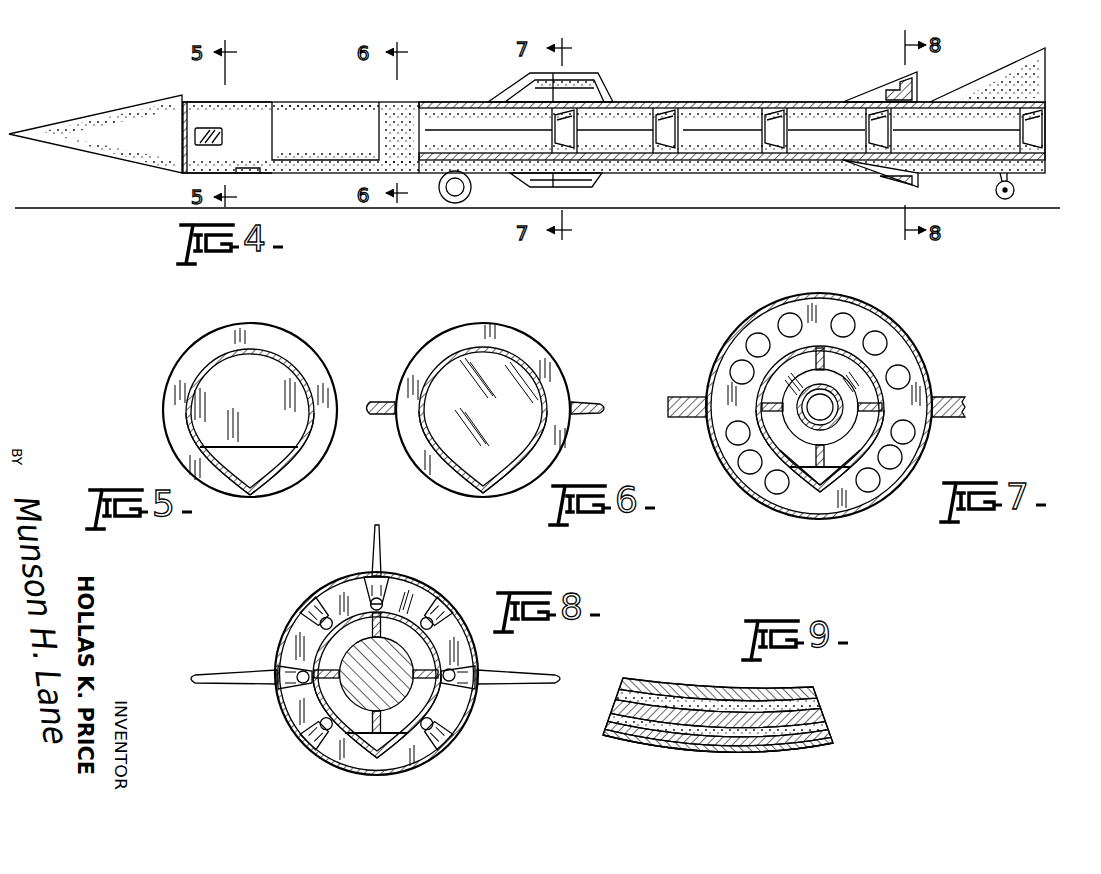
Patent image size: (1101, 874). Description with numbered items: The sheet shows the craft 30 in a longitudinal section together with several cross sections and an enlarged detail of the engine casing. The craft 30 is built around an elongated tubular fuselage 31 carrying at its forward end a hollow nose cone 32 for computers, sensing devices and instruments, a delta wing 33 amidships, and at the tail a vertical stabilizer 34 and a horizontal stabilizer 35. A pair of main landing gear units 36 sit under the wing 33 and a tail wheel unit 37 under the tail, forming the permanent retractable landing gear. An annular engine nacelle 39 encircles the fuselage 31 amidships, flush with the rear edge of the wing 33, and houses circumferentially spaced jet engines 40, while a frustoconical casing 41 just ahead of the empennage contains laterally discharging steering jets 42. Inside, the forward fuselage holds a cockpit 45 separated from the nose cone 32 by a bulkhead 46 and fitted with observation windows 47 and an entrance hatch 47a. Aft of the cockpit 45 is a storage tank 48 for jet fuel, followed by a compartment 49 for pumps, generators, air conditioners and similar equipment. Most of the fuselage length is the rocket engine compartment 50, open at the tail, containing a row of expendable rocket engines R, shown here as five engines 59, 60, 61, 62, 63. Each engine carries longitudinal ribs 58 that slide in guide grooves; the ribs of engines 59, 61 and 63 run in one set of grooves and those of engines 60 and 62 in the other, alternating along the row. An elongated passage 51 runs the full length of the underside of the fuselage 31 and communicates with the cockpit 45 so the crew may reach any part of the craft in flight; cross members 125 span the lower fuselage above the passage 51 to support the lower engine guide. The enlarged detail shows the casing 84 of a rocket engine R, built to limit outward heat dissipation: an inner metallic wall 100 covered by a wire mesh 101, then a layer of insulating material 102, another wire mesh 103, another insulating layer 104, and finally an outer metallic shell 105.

In FIG. 4, the craft 30 is at (718, 78).
In FIG. 4, the tubular fuselage 31 is at (664, 102).
In FIG. 5, the tubular fuselage 31 is at (289, 358).
In FIG. 6, the tubular fuselage 31 is at (537, 372).
In FIG. 7, the tubular fuselage 31 is at (872, 372).
In FIG. 8, the tubular fuselage 31 is at (402, 612).
In FIG. 4, the nose cone 32 is at (108, 112).
In FIG. 5, the nose cone 32 is at (325, 372).
In FIG. 6, the nose cone 32 is at (530, 345).
In FIG. 6, the delta wing 33 is at (592, 402).
In FIG. 7, the delta wing 33 is at (947, 397).
In FIG. 4, the vertical stabilizer 34 is at (983, 72).
In FIG. 8, the vertical stabilizer 34 is at (381, 556).
In FIG. 8, the horizontal stabilizer 35 is at (238, 676).
In FIG. 4, the main landing gear units 36 is at (455, 204).
In FIG. 4, the tail wheel unit 37 is at (1005, 200).
In FIG. 4, the annular engine nacelle 39 is at (583, 74).
In FIG. 7, the annular engine nacelle 39 is at (896, 334).
In FIG. 4, the jet engines 40 is at (598, 92).
In FIG. 7, the jet engines 40 is at (748, 335).
In FIG. 4, the frustoconical casing 41 is at (860, 95).
In FIG. 8, the frustoconical casing 41 is at (470, 708).
In FIG. 4, the steering jets 42 is at (900, 92).
In FIG. 8, the steering jets 42 is at (318, 618).
In FIG. 4, the cockpit 45 is at (262, 100).
In FIG. 5, the cockpit 45 is at (249, 412).
In FIG. 4, the bulkhead 46 is at (182, 140).
In FIG. 5, the bulkhead 46 is at (215, 380).
In FIG. 4, the observation windows 47 is at (223, 138).
In FIG. 4, the entrance hatch 47a is at (262, 177).
In FIG. 4, the storage tank 48 is at (322, 98).
In FIG. 4, the compartment 49 is at (400, 100).
In FIG. 6, the compartment 49 is at (496, 402).
In FIG. 4, the rocket engine compartment 50 is at (775, 118).
In FIG. 7, the rocket engine compartment 50 is at (775, 433).
In FIG. 8, the rocket engine compartment 50 is at (420, 650).
In FIG. 4, the elongated passage 51 is at (662, 174).
In FIG. 5, the elongated passage 51 is at (250, 480).
In FIG. 6, the elongated passage 51 is at (485, 480).
In FIG. 7, the elongated passage 51 is at (810, 482).
In FIG. 8, the elongated passage 51 is at (372, 745).
In FIG. 4, the longitudinal ribs 58 is at (442, 122).
In FIG. 4, the rocket engine 59 is at (956, 130).
In FIG. 4, the rocket engine 60 is at (826, 130).
In FIG. 4, the rocket engine 61 is at (722, 130).
In FIG. 4, the rocket engine 62 is at (615, 130).
In FIG. 4, the rocket engine 63 is at (488, 130).
In FIG. 9, the rocket engine casing 84 is at (734, 759).
In FIG. 9, the inner metallic wall 100 is at (815, 692).
In FIG. 9, the wire mesh 101 is at (818, 703).
In FIG. 9, the layer of insulating material 102 is at (822, 715).
In FIG. 9, the wire mesh 103 is at (826, 726).
In FIG. 9, the insulating layer 104 is at (829, 734).
In FIG. 9, the outer metallic shell 105 is at (832, 741).
In FIG. 7, the cross members 125 is at (830, 467).
In FIG. 4, the rocket engines R is at (738, 114).
In FIG. 7, the rocket engines R is at (768, 455).
In FIG. 8, the rocket engines R is at (316, 690).
In FIG. 9, the rocket engines R is at (655, 748).